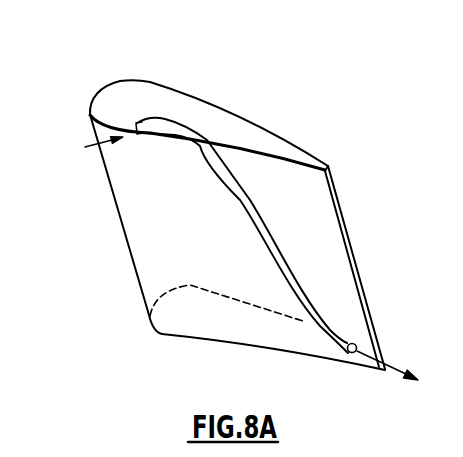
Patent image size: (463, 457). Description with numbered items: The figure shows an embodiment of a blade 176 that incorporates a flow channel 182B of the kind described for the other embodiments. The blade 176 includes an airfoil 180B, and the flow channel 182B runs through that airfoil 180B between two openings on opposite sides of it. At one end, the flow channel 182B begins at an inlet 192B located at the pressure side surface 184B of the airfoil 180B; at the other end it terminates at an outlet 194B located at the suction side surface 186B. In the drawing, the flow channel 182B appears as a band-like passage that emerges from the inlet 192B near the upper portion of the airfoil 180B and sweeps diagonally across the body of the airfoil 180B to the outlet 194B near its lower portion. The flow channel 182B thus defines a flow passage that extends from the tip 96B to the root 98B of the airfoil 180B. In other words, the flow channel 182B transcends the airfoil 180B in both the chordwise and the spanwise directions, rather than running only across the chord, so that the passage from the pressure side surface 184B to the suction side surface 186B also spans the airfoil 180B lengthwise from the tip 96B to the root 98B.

The blade 176 is at (217, 62).
The tip 96B is at (75, 103).
The root 98B is at (122, 316).
The airfoil 180B is at (233, 123).
The flow channel 182B is at (262, 218).
The pressure side surface 184B is at (264, 160).
The suction side surface 186B is at (154, 82).
The inlet 192B is at (139, 134).
The outlet 194B is at (347, 350).